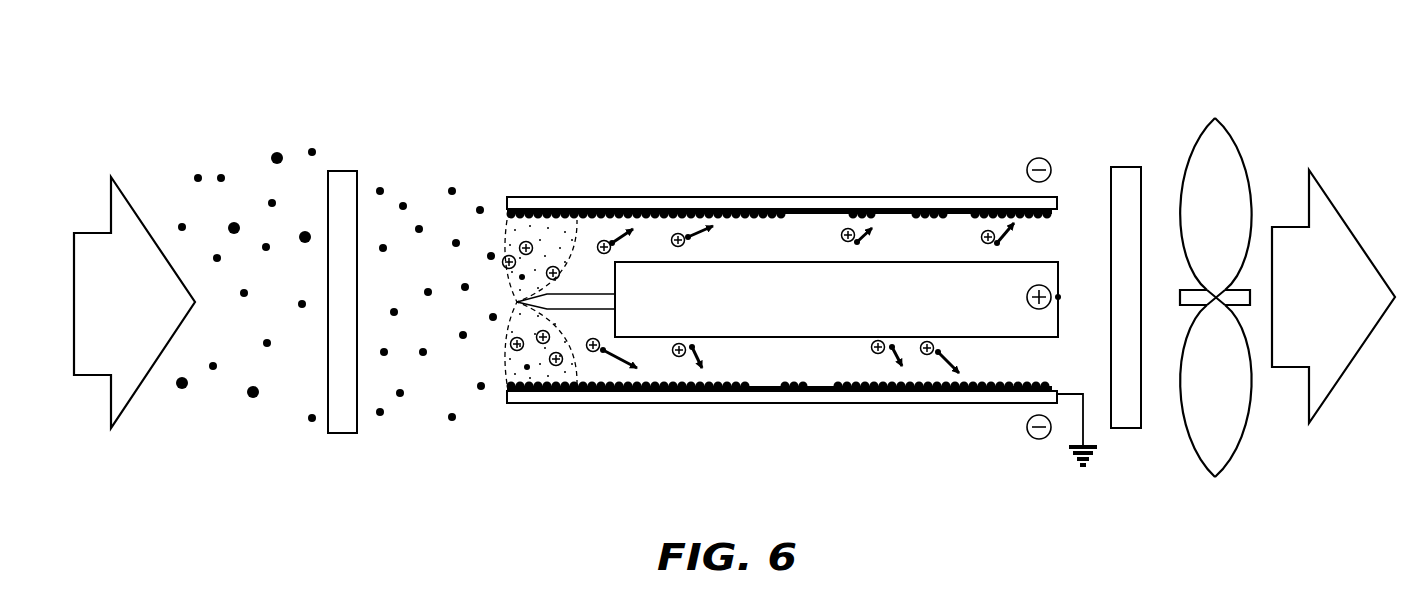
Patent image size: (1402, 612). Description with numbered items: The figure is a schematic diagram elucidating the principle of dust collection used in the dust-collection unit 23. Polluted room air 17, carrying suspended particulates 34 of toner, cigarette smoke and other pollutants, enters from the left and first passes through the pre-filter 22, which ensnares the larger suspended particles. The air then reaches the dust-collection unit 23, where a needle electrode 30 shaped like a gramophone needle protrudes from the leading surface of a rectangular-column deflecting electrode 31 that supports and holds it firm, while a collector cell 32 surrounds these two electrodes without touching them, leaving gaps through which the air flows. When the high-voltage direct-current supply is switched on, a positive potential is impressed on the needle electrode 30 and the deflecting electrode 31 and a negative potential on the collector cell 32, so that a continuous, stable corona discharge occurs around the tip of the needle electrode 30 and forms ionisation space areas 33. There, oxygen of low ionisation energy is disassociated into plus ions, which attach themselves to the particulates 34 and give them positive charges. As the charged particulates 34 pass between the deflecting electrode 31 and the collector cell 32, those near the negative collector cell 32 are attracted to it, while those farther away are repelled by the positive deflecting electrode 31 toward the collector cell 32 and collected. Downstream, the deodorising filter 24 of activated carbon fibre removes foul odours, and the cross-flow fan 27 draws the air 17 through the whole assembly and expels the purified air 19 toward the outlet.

The air 17 is at (125, 400).
The outgoing air flow arrow 19 is at (1337, 370).
The pre-filter 22 is at (342, 171).
The dust-collection unit 23 is at (848, 98).
The deodorising filter 24 is at (1124, 168).
The cross-flow fan 27 is at (1220, 133).
The needle electrode 30 is at (587, 293).
The deflecting electrode 31 is at (768, 322).
The collector cell 32 is at (725, 198).
The ionisation space area 33 is at (541, 228).
The particulates 34 is at (221, 174).